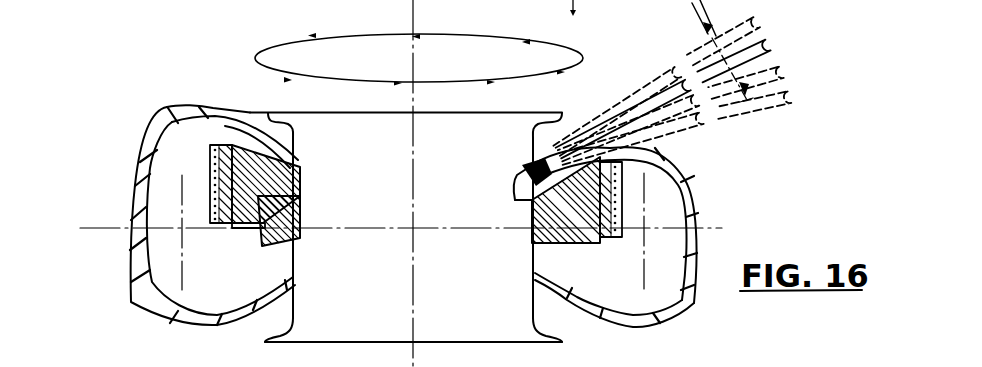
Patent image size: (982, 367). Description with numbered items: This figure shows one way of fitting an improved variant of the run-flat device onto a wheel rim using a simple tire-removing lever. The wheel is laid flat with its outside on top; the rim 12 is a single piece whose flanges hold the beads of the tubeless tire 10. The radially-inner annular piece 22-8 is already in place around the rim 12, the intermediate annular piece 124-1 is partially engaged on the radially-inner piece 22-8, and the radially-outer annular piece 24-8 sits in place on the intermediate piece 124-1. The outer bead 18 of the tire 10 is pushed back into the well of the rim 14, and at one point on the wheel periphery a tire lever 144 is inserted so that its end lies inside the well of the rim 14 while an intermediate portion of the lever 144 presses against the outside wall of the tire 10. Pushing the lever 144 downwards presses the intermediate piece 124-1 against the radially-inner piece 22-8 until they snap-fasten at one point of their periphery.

The tire 10 is at (150, 136).
The radially-outer annular piece 24-8 is at (210, 173).
The bead 18 is at (299, 168).
The well of the rim 14 is at (518, 177).
The tire lever 144 is at (776, 48).
The intermediate annular piece 124-1 is at (244, 229).
The radially-inner annular piece 22-8 is at (286, 243).
The rim 12 is at (534, 274).